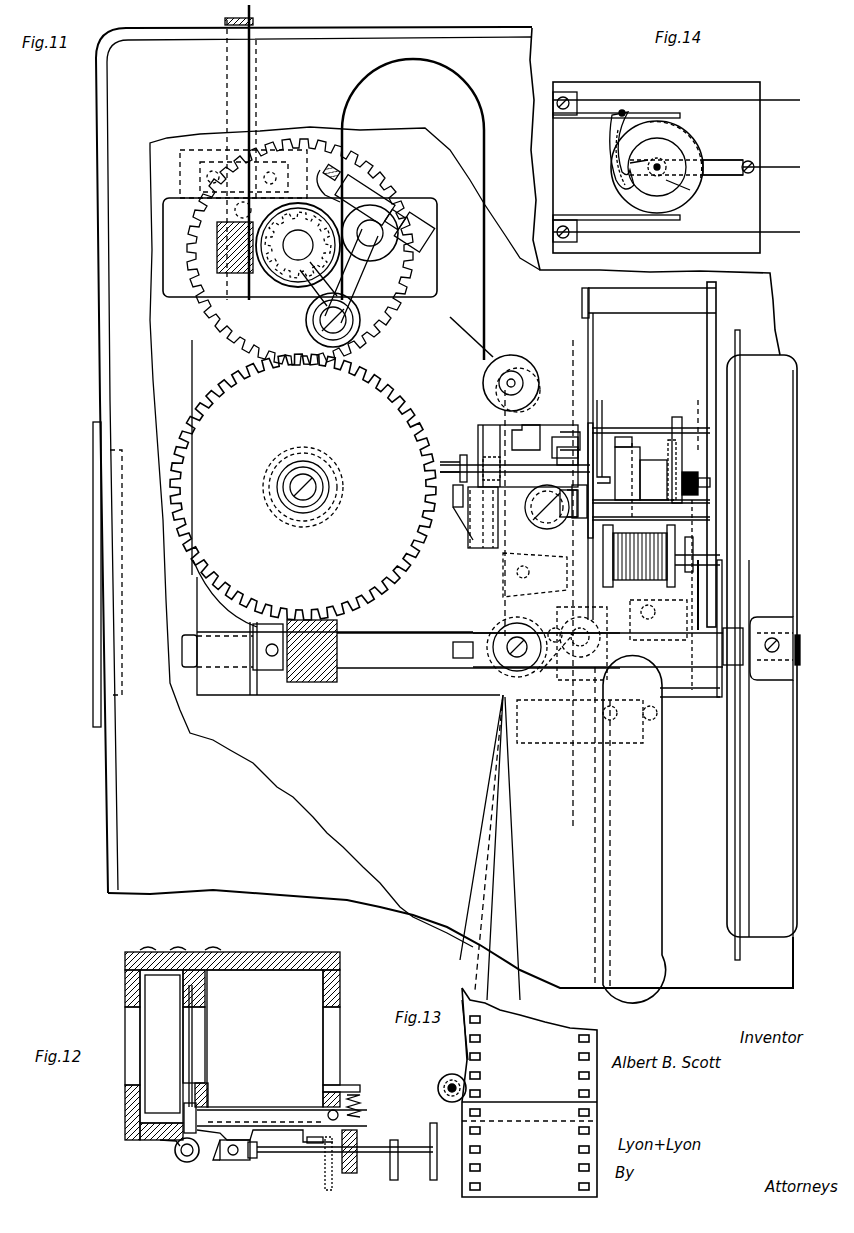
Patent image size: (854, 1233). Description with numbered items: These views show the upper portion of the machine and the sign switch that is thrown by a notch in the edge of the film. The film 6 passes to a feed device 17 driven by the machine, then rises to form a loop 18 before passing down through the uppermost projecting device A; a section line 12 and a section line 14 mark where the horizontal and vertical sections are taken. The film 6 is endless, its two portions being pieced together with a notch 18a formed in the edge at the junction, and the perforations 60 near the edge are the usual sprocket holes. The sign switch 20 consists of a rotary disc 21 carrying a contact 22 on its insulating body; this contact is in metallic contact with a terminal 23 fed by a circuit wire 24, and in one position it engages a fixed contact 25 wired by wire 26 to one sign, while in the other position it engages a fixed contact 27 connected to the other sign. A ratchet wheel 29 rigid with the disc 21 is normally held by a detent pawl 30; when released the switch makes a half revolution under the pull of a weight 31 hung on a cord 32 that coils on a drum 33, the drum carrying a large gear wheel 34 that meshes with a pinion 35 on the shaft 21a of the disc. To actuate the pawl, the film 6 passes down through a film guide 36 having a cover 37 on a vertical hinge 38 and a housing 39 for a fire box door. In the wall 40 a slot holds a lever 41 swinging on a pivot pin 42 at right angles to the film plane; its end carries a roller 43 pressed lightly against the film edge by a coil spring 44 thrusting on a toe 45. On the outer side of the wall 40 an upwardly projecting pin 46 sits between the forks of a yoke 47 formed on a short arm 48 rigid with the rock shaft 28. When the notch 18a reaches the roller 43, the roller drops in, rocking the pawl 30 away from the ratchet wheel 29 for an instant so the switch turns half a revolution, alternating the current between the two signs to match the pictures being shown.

In FIG. 11, the film 6 is at (252, 62).
In FIG. 12, the film 6 is at (194, 1030).
In FIG. 13, the film 6 is at (528, 1025).
In FIG. 11, the section line 12 is at (430, 466).
In FIG. 11, the section line 14 is at (685, 405).
In FIG. 11, the feed device 17 is at (280, 294).
In FIG. 11, the loop 18 is at (419, 58).
In FIG. 13, the notch 18a is at (466, 1060).
In FIG. 14, the sign switch 20 is at (770, 132).
In FIG. 11, the rotary disc 21 is at (641, 478).
In FIG. 14, the rotary disc 21 is at (690, 152).
In FIG. 11, the shaft 21a is at (712, 486).
In FIG. 14, the shaft 21a is at (648, 164).
In FIG. 14, the contact 22 is at (683, 131).
In FIG. 14, the terminal 23 is at (732, 172).
In FIG. 14, the circuit wire 24 is at (780, 172).
In FIG. 14, the fixed contact 25 is at (657, 113).
In FIG. 14, the wire 26 is at (777, 100).
In FIG. 14, the fixed contact 27 is at (621, 221).
In FIG. 11, the rock shaft 28 is at (648, 428).
In FIG. 14, the rock shaft 28 is at (622, 110).
In FIG. 12, the rock shaft 28 is at (432, 1146).
In FIG. 11, the ratchet wheel 29 is at (677, 455).
In FIG. 14, the ratchet wheel 29 is at (673, 182).
In FIG. 11, the detent pawl 30 is at (676, 417).
In FIG. 14, the detent pawl 30 is at (611, 137).
In FIG. 12, the detent pawl 30 is at (390, 1172).
In FIG. 11, the weight 31 is at (656, 777).
In FIG. 11, the cord 32 is at (620, 648).
In FIG. 11, the drum 33 is at (620, 540).
In FIG. 11, the gear wheel 34 is at (691, 617).
In FIG. 11, the pinion 35 is at (700, 476).
In FIG. 12, the film guide 36 is at (205, 985).
In FIG. 12, the cover 37 is at (125, 983).
In FIG. 12, the vertical hinge 38 is at (180, 1153).
In FIG. 12, the housing 39 is at (305, 941).
In FIG. 12, the wall 40 is at (297, 1154).
In FIG. 11, the lever 41 is at (525, 473).
In FIG. 12, the lever 41 is at (266, 1110).
In FIG. 12, the pivot pin 42 is at (326, 1112).
In FIG. 11, the roller 43 is at (462, 456).
In FIG. 12, the roller 43 is at (186, 1110).
In FIG. 13, the roller 43 is at (440, 1090).
In FIG. 12, the coil spring 44 is at (361, 1102).
In FIG. 12, the toe 45 is at (360, 1126).
In FIG. 11, the pin 46 is at (528, 440).
In FIG. 12, the pin 46 is at (237, 1162).
In FIG. 11, the yoke 47 is at (487, 445).
In FIG. 12, the yoke 47 is at (223, 1162).
In FIG. 12, the short arm 48 is at (256, 1158).
In FIG. 13, the perforations 60 is at (586, 1053).
In FIG. 11, the projecting device A is at (92, 406).